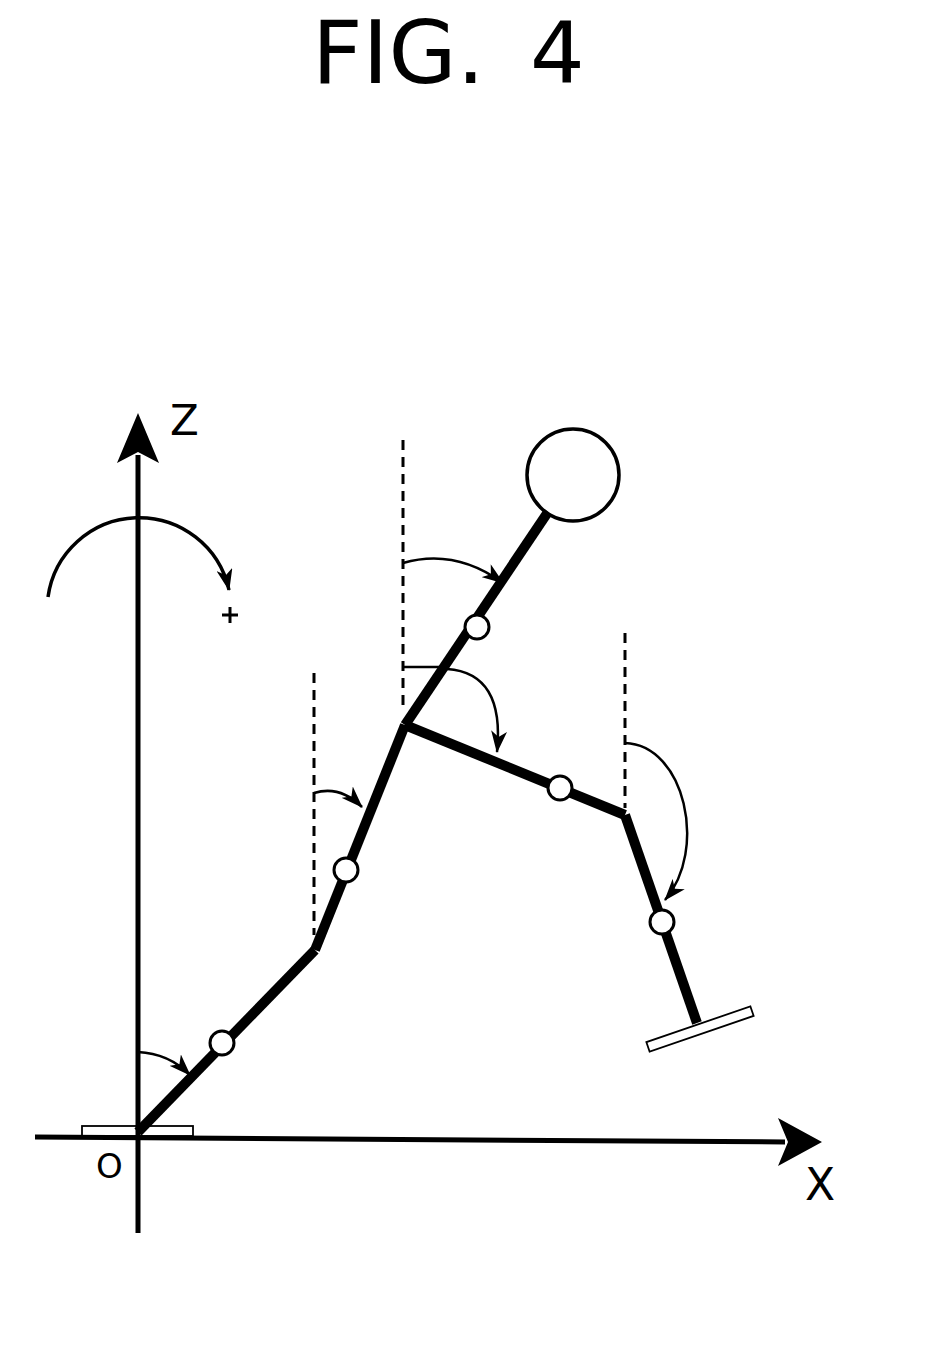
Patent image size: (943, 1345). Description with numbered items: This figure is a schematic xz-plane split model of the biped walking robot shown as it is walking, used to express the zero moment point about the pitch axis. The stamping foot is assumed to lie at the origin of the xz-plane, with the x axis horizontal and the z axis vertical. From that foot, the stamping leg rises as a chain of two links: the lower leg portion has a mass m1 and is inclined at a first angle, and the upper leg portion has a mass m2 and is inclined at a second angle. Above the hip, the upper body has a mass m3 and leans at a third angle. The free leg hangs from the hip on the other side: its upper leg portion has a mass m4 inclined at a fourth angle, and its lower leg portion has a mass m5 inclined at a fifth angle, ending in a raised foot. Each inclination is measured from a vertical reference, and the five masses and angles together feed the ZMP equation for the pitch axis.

The mass of the stamping leg lower leg portion m1 is at (226, 1041).
The mass of the stamping leg upper leg portion m2 is at (325, 837).
The mass of the upper body m3 is at (486, 618).
The mass of the free leg upper leg portion m4 is at (515, 790).
The mass of the free leg lower leg portion m5 is at (689, 933).